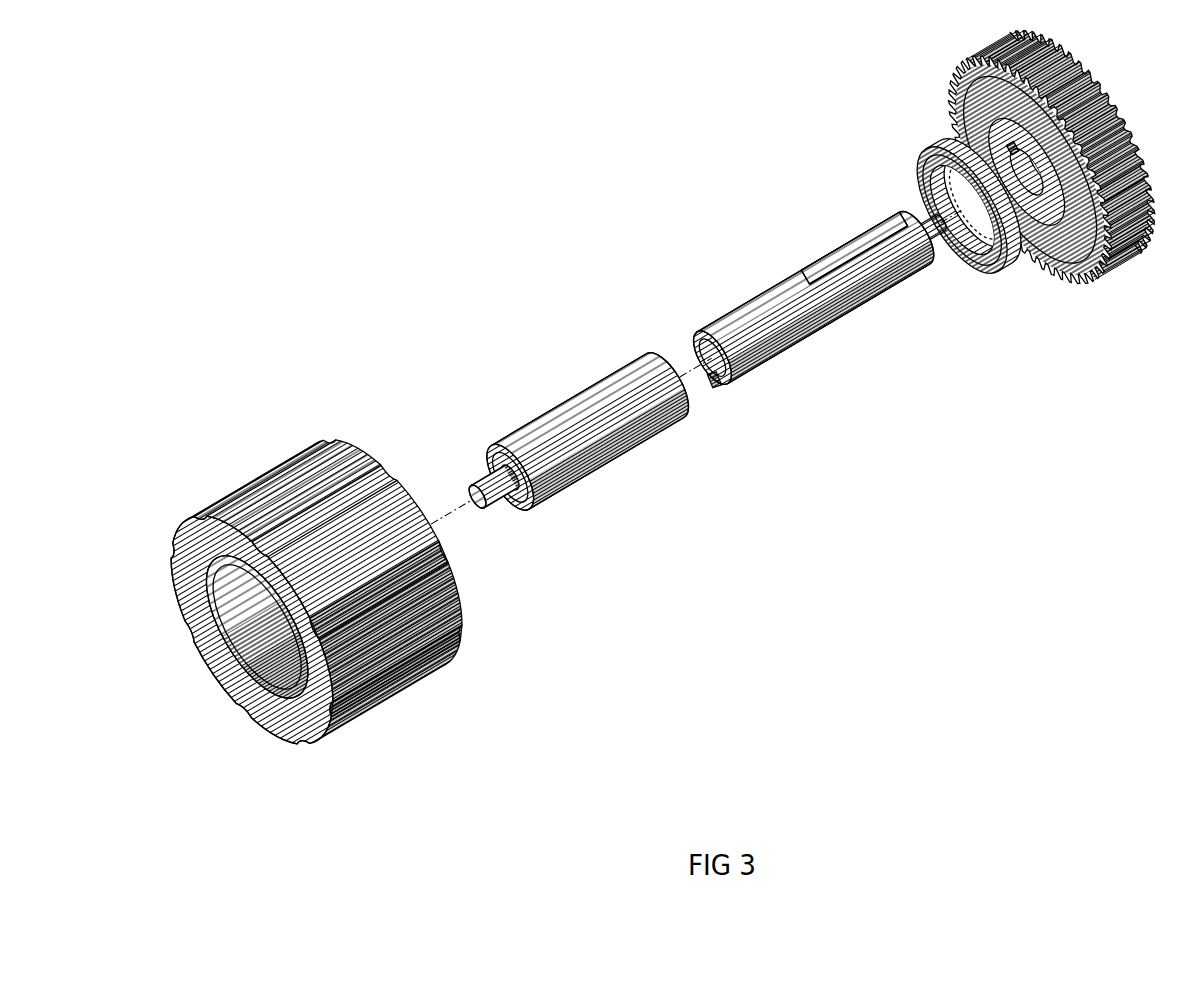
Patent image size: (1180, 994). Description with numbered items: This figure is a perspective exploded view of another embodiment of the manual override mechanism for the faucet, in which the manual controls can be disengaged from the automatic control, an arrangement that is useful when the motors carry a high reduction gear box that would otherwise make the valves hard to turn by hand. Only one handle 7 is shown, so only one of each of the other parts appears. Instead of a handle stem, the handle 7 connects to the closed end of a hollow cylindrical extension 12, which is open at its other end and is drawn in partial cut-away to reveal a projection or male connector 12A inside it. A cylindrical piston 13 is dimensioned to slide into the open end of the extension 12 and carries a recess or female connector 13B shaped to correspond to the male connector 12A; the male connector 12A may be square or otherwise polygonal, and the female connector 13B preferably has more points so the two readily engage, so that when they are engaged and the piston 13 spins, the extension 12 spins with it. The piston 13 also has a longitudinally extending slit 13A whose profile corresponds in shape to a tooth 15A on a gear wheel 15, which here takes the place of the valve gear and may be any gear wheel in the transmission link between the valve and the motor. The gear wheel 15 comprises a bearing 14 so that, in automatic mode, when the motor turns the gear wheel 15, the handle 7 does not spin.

The handle 7 is at (252, 630).
The hollow cylindrical extension 12 is at (545, 417).
The male connector 12A is at (543, 470).
The piston 13 is at (785, 287).
The longitudinally extending slit 13A is at (860, 252).
The female connector 13B is at (718, 372).
The bearing 14 is at (918, 174).
The gear wheel 15 is at (985, 88).
The tooth 15A is at (1057, 150).